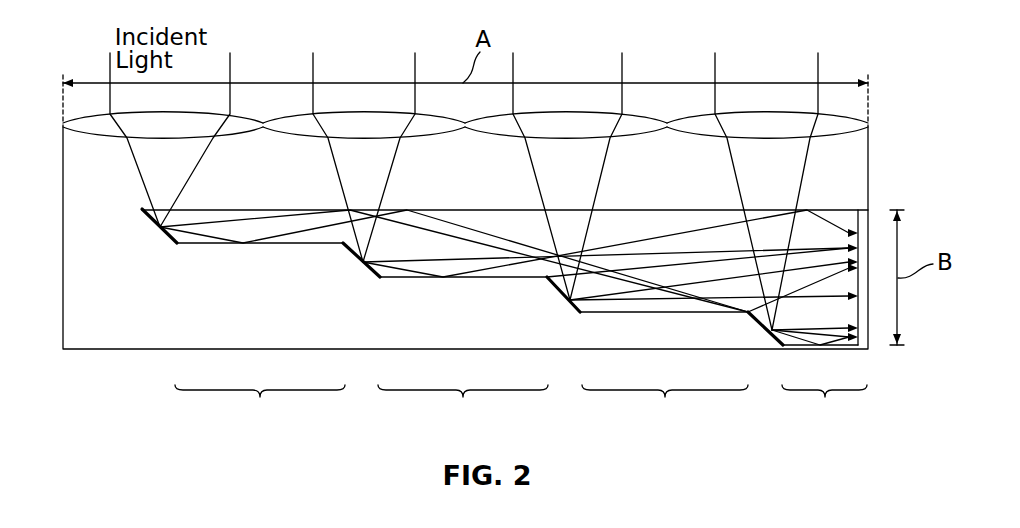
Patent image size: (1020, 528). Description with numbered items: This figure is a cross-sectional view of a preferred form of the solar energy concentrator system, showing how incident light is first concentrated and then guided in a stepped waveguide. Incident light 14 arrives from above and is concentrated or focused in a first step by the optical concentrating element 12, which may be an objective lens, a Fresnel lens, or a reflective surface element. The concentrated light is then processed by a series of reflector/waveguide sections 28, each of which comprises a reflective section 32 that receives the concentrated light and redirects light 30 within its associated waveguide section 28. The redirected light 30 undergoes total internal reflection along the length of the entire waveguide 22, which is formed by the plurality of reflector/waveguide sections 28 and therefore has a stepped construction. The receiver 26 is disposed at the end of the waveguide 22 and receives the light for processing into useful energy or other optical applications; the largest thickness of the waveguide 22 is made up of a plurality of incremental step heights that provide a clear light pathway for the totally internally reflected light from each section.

The optical concentrating element 12 is at (555, 122).
The input light 14 is at (603, 173).
The waveguide 22 is at (858, 160).
The receiver 26 is at (870, 340).
The reflector/waveguide section 28 is at (521, 334).
The redirected light 30 is at (485, 230).
The reflective section 32 is at (153, 233).